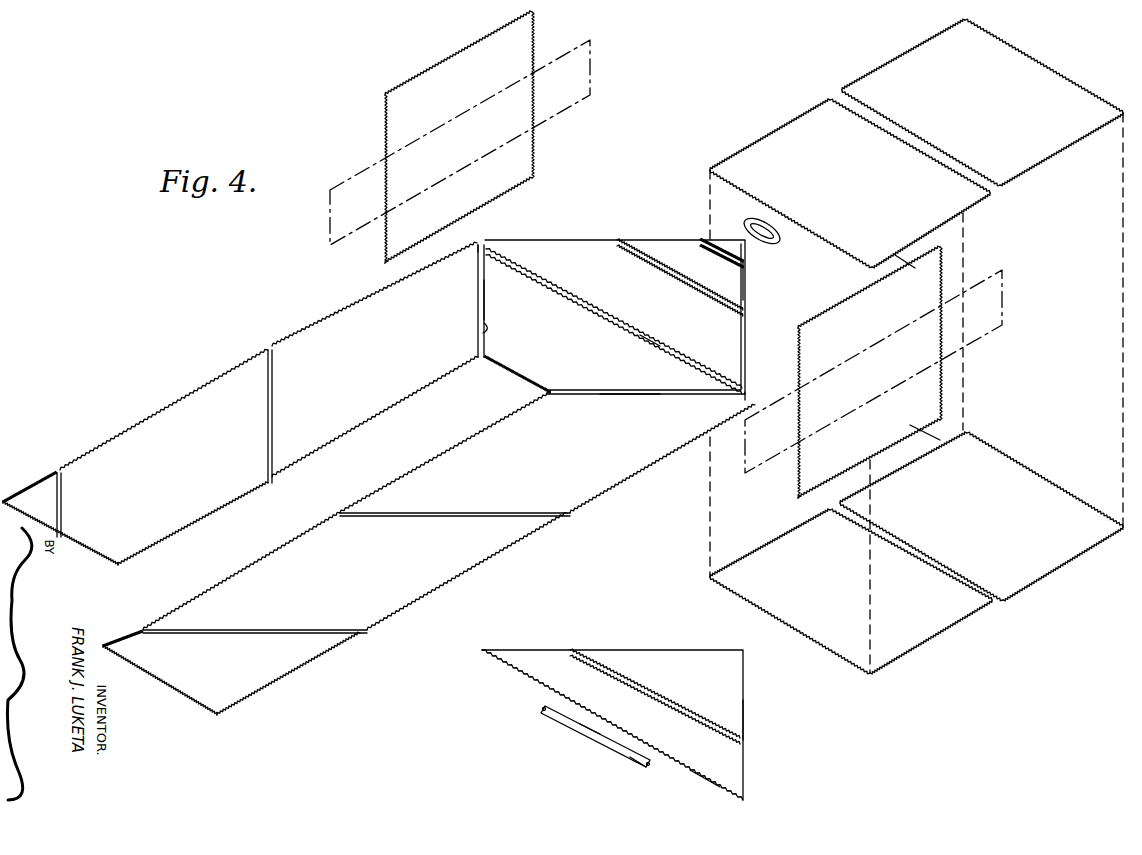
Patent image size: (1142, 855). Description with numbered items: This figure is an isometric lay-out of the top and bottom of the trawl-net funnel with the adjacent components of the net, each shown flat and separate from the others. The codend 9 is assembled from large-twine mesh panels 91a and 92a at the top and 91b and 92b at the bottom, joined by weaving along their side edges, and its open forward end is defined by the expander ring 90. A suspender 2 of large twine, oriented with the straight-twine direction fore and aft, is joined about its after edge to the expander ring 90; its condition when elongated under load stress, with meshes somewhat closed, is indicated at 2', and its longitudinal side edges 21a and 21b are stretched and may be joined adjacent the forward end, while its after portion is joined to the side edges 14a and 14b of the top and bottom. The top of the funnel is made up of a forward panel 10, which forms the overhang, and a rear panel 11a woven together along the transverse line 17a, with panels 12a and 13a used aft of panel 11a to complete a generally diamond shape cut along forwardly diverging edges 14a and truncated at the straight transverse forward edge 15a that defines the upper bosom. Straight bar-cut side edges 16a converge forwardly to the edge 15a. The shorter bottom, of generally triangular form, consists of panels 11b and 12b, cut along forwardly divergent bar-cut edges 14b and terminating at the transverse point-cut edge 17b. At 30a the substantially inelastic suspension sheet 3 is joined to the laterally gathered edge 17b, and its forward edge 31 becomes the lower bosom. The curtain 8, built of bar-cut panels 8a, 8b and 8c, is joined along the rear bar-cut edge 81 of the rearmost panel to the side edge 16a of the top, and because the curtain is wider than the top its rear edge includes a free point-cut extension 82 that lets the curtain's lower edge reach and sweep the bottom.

The suspender 2 is at (644, 254).
The stretched suspender condition 2' is at (662, 256).
The suspension sheet 3 is at (543, 708).
The curtain 8 is at (262, 352).
The rearmost curtain panel 8a is at (368, 367).
The curtain panel 8b is at (175, 484).
The curtain panel 8c is at (42, 479).
The codend 9 is at (840, 86).
The forward top panel 10 is at (571, 350).
The rear top panel 11a is at (636, 289).
The bottom panel 11b is at (624, 700).
The top panel 12a is at (735, 275).
The bottom panel 12b is at (711, 685).
The top panel 13a is at (722, 241).
The forwardly diverging side edge of top 14a is at (629, 241).
The forwardly divergent side edge of bottom 14b is at (572, 650).
The forward edge of top 15a is at (513, 378).
The side edge of top 16a is at (483, 300).
The transverse line 17a is at (652, 337).
The forward edge of bottom 17b is at (700, 782).
The longitudinal side edge of suspender 21a is at (906, 260).
The longitudinal side edge of suspender 21b is at (924, 433).
The junction of suspension sheet 30a is at (653, 755).
The forward edge of suspension sheet 31 is at (586, 737).
The rear bar-cut edge of curtain 81 is at (483, 330).
The free point-cut extension 82 is at (478, 244).
The expander ring 90 is at (780, 246).
The top codend panel 91a is at (876, 188).
The bottom codend panel 91b is at (852, 595).
The top codend panel 92a is at (1005, 110).
The bottom codend panel 92b is at (1001, 530).